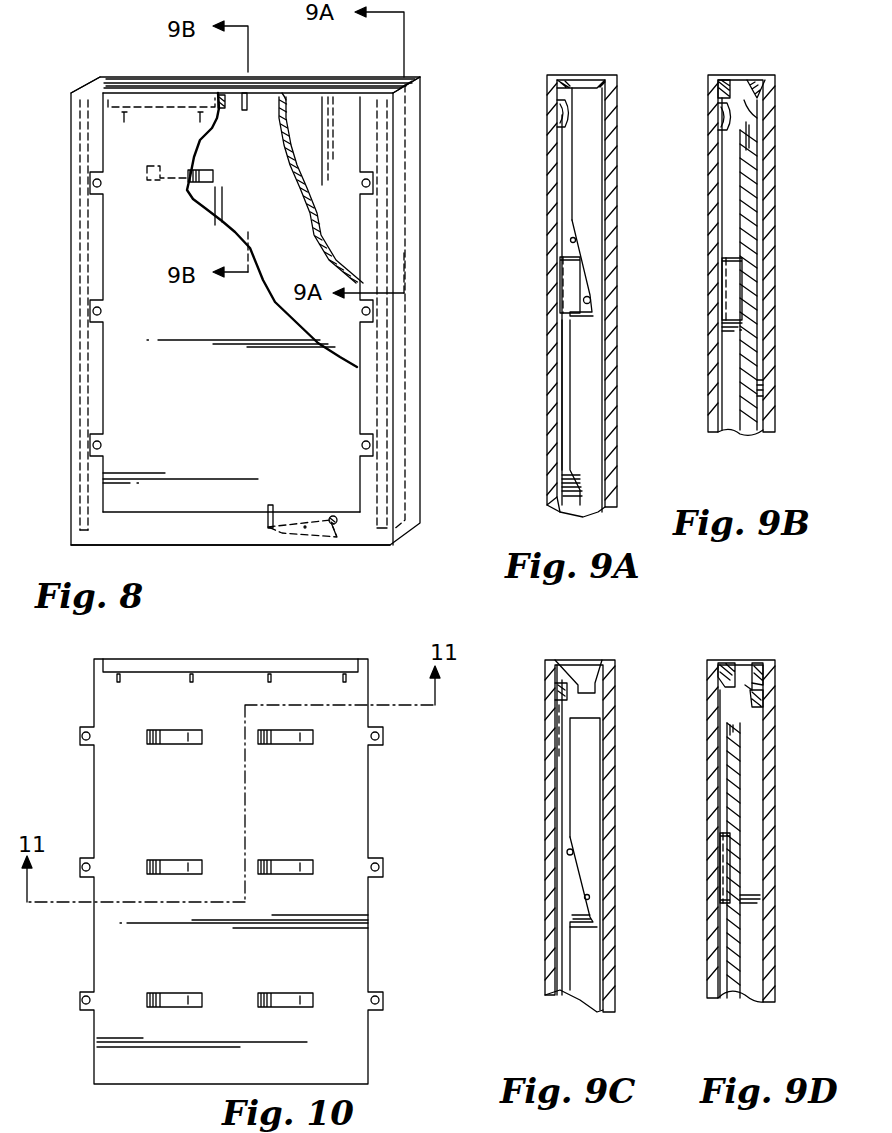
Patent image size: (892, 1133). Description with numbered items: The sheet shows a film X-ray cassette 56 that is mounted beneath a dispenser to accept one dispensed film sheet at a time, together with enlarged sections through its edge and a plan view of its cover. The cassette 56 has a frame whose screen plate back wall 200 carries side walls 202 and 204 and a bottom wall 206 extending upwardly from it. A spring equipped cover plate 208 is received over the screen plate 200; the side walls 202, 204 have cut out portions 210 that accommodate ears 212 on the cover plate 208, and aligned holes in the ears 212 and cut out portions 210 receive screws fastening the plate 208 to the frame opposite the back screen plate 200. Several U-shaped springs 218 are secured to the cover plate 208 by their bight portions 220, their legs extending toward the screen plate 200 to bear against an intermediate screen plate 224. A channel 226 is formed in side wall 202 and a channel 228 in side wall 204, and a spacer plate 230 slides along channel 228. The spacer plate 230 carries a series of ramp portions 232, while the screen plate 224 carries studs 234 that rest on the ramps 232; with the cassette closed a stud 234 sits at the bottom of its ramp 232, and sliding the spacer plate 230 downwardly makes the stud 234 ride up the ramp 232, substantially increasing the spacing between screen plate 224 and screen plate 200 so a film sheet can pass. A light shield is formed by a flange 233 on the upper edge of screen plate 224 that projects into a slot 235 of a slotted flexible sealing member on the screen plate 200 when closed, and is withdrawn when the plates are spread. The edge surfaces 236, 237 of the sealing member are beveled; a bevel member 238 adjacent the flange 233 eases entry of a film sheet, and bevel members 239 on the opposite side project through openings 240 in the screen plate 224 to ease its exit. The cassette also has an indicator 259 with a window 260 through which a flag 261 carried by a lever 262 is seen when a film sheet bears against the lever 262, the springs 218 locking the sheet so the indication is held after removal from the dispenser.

In FIG. 8, the cassette 56 is at (455, 88).
In FIG. 8, the screen plate back wall 200 is at (357, 215).
In FIG. 9B, the screen plate back wall 200 is at (775, 82).
In FIG. 9D, the screen plate back wall 200 is at (773, 663).
In FIG. 8, the side wall 202 is at (70, 238).
In FIG. 8, the side wall 204 is at (393, 187).
In FIG. 8, the bottom wall 206 is at (258, 548).
In FIG. 8, the spring equipped cover plate 208 is at (260, 388).
In FIG. 9A, the spring equipped cover plate 208 is at (548, 458).
In FIG. 9B, the spring equipped cover plate 208 is at (708, 365).
In FIG. 10, the spring equipped cover plate 208 is at (250, 659).
In FIG. 8, the cut out portion 210 is at (90, 175).
In FIG. 10, the ear 212 is at (80, 727).
In FIG. 8, the U-shaped spring 218 is at (208, 170).
In FIG. 9A, the U-shaped spring 218 is at (570, 285).
In FIG. 9B, the U-shaped spring 218 is at (730, 297).
In FIG. 9D, the U-shaped spring 218 is at (727, 863).
In FIG. 10, the U-shaped spring 218 is at (200, 860).
In FIG. 10, the bight portion 220 is at (170, 744).
In FIG. 8, the intermediate screen plate 224 is at (290, 213).
In FIG. 9A, the intermediate screen plate 224 is at (580, 282).
In FIG. 8, the channel 226 is at (115, 58).
In FIG. 8, the channel 228 is at (393, 82).
In FIG. 8, the spacer plate 230 is at (400, 233).
In FIG. 9A, the spacer plate 230 is at (583, 135).
In FIG. 9C, the spacer plate 230 is at (587, 747).
In FIG. 9A, the ramp portion 232 is at (577, 248).
In FIG. 9C, the ramp portion 232 is at (590, 897).
In FIG. 9B, the flange 233 is at (740, 97).
In FIG. 9A, the stud 234 is at (590, 297).
In FIG. 9C, the stud 234 is at (577, 857).
In FIG. 9D, the slot 235 is at (745, 680).
In FIG. 9D, the beveled edge surface 236 is at (753, 673).
In FIG. 9D, the beveled edge surface 237 is at (755, 707).
In FIG. 8, the bevel member 238 is at (225, 97).
In FIG. 9B, the bevel member 238 is at (724, 89).
In FIG. 9D, the bevel member 238 is at (727, 673).
In FIG. 8, the bevel member 239 is at (200, 117).
In FIG. 9A, the bevel member 239 is at (727, 133).
In FIG. 9B, the bevel member 239 is at (728, 117).
In FIG. 8, the opening 240 is at (253, 100).
In FIG. 9B, the opening 240 is at (746, 120).
In FIG. 8, the indicator 259 is at (308, 550).
In FIG. 8, the window 260 is at (337, 522).
In FIG. 8, the flag 261 is at (337, 543).
In FIG. 8, the lever 262 is at (288, 518).